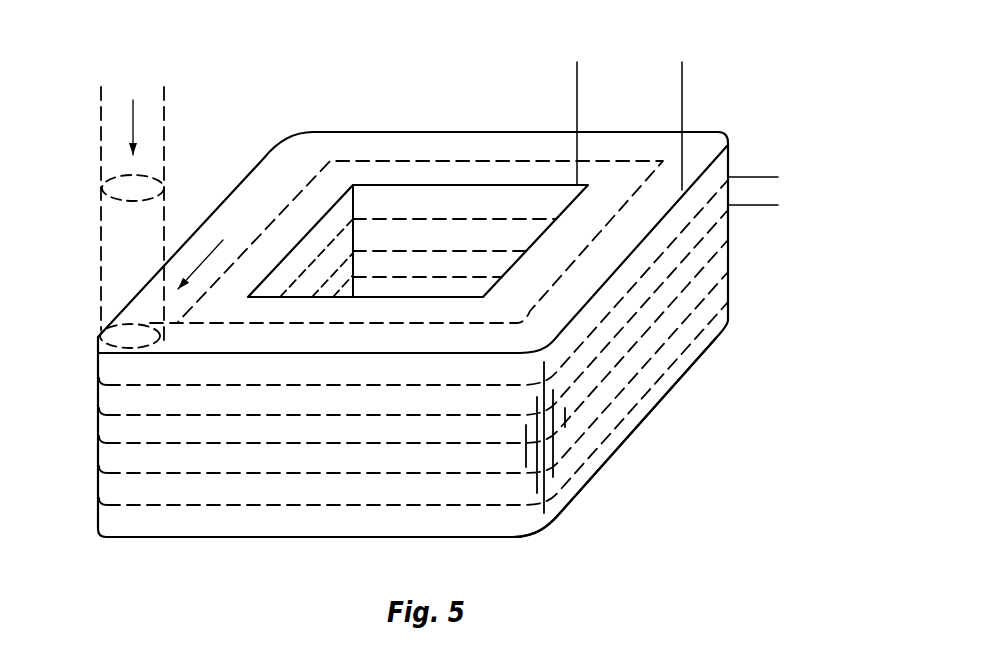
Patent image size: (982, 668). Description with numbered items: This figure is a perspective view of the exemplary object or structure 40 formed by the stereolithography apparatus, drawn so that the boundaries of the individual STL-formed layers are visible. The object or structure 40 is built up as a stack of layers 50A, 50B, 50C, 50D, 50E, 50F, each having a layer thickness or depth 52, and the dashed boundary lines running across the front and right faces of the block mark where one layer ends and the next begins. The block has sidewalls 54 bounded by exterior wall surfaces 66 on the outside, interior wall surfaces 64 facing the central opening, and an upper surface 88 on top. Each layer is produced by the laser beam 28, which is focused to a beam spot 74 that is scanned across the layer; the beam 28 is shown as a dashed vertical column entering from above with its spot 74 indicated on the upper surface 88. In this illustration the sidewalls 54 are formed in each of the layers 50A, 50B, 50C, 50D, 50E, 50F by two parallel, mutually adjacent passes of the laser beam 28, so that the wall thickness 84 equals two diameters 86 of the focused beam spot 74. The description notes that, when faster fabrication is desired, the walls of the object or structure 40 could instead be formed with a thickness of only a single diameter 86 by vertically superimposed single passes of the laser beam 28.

The laser beam 28 is at (167, 98).
The object or structure 40 is at (736, 86).
The layer 50A is at (572, 477).
The layer 50B is at (583, 437).
The layer 50C is at (590, 395).
The layer 50D is at (593, 362).
The layer 50E is at (603, 330).
The layer 50F is at (603, 295).
The layer thickness 52 is at (764, 145).
The sidewalls 54 is at (763, 383).
The interior wall surfaces 64 is at (285, 273).
The exterior wall surfaces 66 is at (458, 523).
The focused beam spot 74 is at (128, 340).
The wall thickness 84 is at (682, 75).
The diameter of focused beam spot 86 is at (164, 303).
The upper surface 88 is at (592, 145).